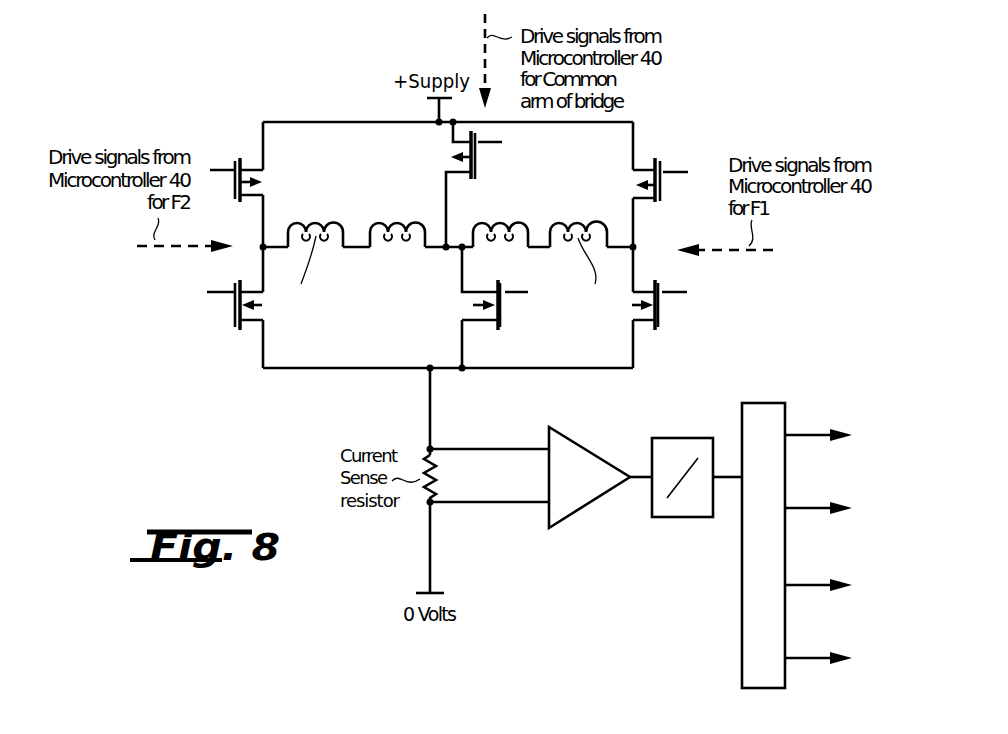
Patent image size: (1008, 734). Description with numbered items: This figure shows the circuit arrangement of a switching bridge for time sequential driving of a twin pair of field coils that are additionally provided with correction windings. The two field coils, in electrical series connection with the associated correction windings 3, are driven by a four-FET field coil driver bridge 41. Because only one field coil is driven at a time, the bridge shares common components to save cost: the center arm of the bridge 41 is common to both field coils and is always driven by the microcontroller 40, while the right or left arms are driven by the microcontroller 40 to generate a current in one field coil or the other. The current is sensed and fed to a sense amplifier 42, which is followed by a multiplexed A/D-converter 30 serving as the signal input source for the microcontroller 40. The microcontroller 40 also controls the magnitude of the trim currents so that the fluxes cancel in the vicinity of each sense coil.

The correction winding 3 is at (500, 226).
The A/D-converter 30 is at (683, 510).
The microcontroller 40 is at (760, 413).
The field coil driver bridge 41 is at (651, 138).
The sense amplifier 42 is at (576, 455).